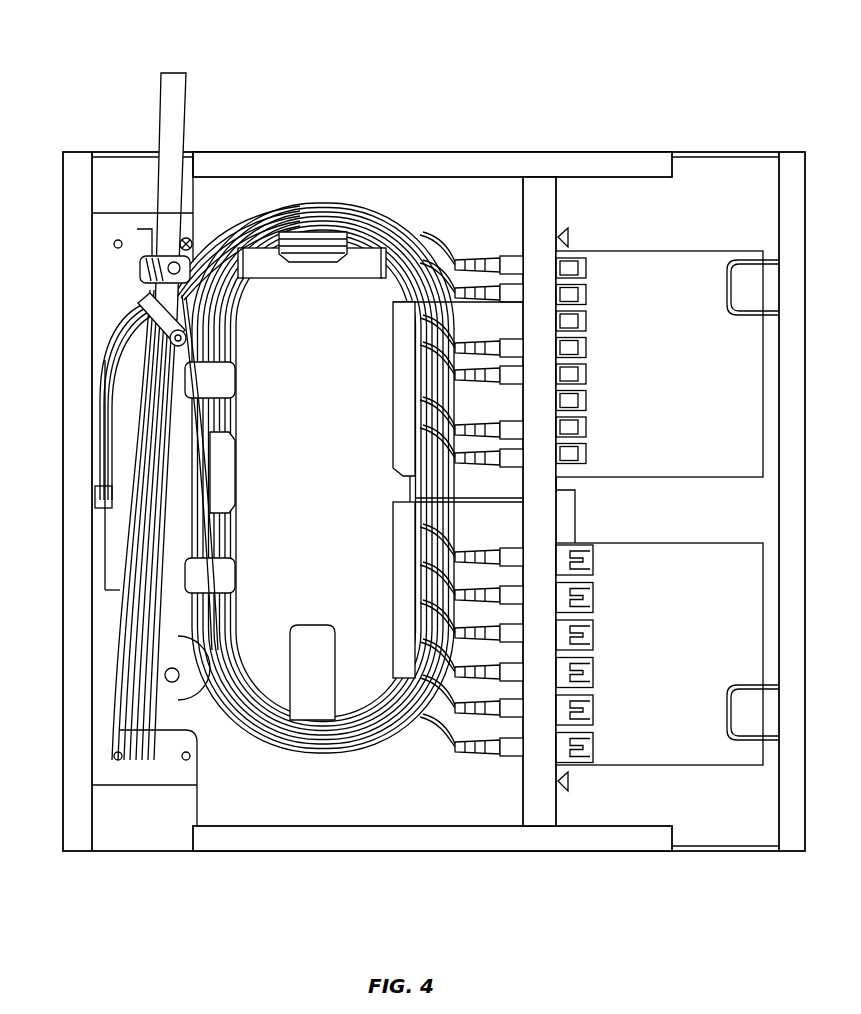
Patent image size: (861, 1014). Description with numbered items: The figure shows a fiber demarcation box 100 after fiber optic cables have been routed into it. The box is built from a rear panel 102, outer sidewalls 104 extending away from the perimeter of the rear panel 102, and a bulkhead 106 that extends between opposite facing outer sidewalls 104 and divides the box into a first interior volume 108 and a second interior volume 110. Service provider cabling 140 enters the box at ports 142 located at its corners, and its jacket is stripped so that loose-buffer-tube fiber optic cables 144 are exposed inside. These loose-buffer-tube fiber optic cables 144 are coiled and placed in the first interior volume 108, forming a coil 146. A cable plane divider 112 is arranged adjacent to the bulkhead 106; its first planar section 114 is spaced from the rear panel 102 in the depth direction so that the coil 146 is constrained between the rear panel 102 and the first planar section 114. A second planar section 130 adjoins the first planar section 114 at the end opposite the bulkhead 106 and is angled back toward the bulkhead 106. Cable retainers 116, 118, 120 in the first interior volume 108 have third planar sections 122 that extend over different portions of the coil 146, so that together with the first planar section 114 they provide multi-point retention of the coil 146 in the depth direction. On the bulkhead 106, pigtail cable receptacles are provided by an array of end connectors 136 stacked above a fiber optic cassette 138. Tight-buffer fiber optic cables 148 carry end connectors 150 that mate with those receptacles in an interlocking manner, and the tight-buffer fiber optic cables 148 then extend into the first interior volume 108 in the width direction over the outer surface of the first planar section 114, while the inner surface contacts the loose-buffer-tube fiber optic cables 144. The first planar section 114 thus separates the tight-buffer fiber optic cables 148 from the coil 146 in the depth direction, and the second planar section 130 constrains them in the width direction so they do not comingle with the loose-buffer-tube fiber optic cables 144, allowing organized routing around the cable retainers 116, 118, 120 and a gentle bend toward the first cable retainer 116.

The fiber demarcation box 100 is at (335, 76).
The rear panel 102 is at (208, 489).
The outer sidewalls 104 is at (405, 150).
The bulkhead 106 is at (538, 212).
The first interior volume 108 is at (238, 190).
The second interior volume 110 is at (634, 208).
The cable plane divider 112 is at (378, 402).
The first planar section 114 is at (356, 250).
The first cable retainer 116 is at (324, 287).
The cable retainer 118 is at (289, 615).
The cable retainer 120 is at (218, 472).
The third planar sections 122 is at (352, 268).
The second planar section 130 is at (400, 382).
The end connectors 136 is at (572, 292).
The fiber optic cassette 138 is at (672, 282).
The service provider cabling 140 is at (172, 128).
The ports 142 is at (118, 155).
The loose-buffer-tube fiber optic cables 144 is at (230, 325).
The coil 146 is at (256, 285).
The tight-buffer fiber optic cables 148 is at (426, 250).
The end connectors 150 is at (512, 266).